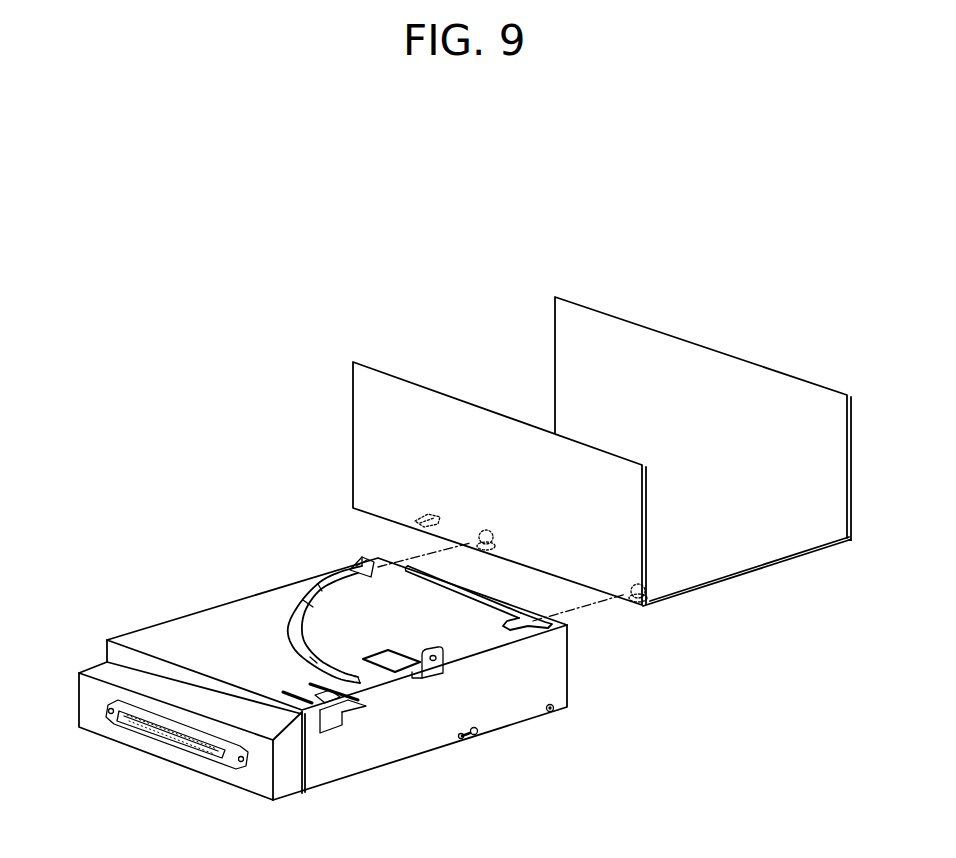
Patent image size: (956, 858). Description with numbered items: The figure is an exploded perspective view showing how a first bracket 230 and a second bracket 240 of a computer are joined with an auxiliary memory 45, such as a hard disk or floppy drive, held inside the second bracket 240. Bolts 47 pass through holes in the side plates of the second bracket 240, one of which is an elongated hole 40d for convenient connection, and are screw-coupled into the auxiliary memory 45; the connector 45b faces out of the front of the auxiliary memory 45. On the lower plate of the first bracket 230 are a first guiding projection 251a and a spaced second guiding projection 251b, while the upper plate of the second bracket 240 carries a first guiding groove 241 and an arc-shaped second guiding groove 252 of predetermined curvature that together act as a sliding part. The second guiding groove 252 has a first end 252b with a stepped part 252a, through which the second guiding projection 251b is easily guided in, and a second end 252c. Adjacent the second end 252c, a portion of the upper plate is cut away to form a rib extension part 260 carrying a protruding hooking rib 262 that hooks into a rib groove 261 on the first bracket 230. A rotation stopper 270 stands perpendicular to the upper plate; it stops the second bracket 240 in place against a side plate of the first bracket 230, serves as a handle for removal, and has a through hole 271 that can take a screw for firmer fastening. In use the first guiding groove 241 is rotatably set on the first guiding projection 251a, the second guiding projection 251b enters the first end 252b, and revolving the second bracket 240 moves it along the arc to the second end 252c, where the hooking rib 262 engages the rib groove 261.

The first bracket 230 is at (774, 362).
The second bracket 240 is at (171, 615).
The first guiding groove 241 is at (536, 630).
The first guiding projection 251a is at (669, 577).
The second guiding projection 251b is at (526, 528).
The second guiding groove 252 is at (297, 603).
The stepped part 252a is at (365, 560).
The first end 252b is at (325, 586).
The second end 252c is at (362, 690).
The rib extension part 260 is at (338, 722).
The rib groove 261 is at (457, 505).
The hooking rib 262 is at (300, 690).
The rotation stopper 270 is at (436, 672).
The through hole 271 is at (446, 664).
The elongated hole 40d is at (482, 736).
The auxiliary memory 45 is at (289, 804).
The connector 45b is at (183, 760).
The bolts 47 is at (554, 714).